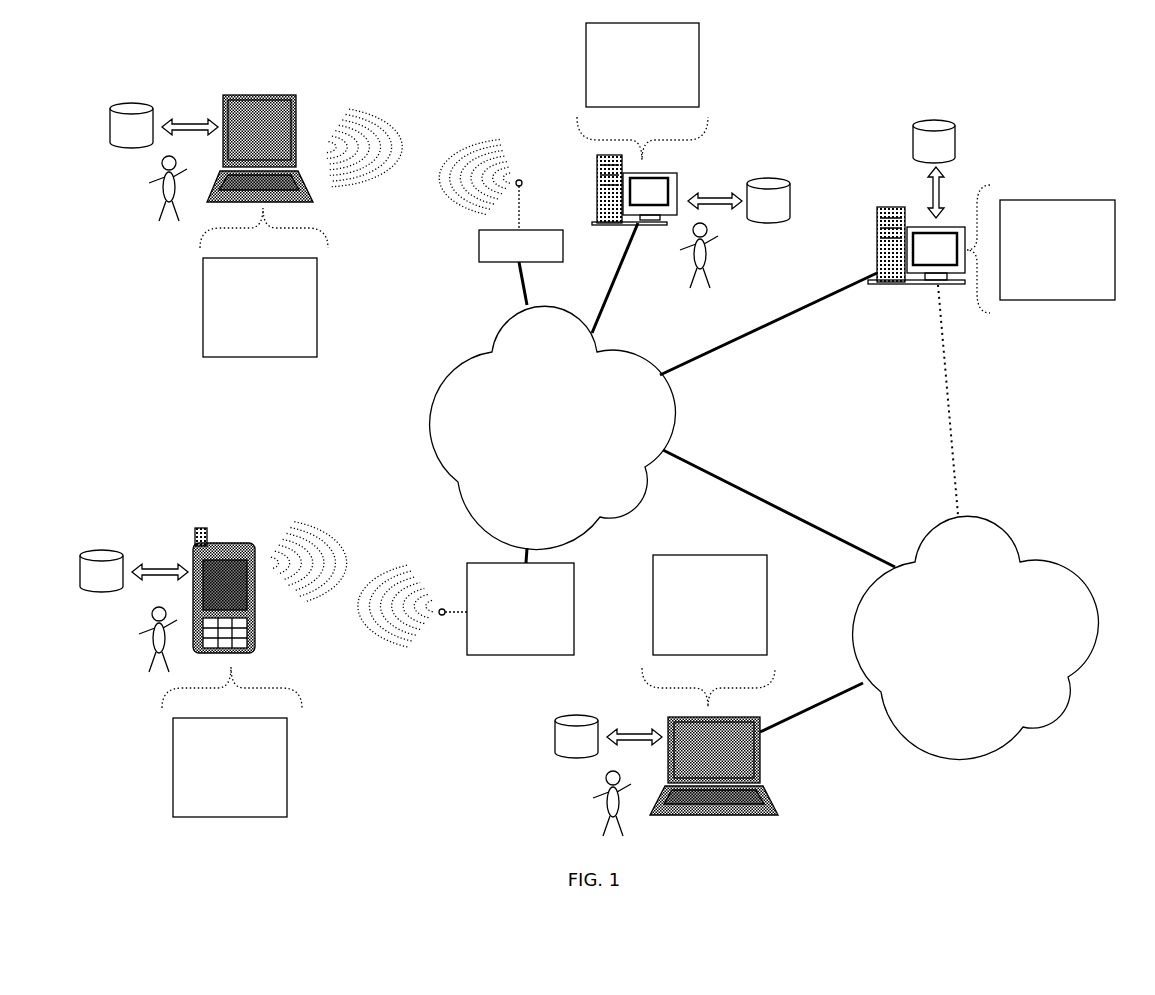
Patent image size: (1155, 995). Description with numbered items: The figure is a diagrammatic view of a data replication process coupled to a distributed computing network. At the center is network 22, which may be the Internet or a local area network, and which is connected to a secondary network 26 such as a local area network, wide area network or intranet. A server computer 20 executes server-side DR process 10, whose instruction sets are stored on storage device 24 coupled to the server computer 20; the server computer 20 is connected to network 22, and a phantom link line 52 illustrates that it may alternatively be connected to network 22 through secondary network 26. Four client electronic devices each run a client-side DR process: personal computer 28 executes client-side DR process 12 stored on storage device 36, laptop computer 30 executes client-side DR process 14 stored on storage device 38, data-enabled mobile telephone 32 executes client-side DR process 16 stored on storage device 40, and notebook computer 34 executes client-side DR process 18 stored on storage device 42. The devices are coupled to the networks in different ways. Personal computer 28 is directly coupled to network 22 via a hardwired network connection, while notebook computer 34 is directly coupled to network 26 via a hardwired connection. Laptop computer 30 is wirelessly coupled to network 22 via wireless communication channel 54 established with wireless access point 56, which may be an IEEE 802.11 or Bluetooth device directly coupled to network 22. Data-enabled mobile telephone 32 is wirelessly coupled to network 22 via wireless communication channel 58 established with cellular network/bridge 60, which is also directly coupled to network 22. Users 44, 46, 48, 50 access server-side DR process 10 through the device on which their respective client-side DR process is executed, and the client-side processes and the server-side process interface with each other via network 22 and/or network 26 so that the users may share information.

The server-side DR process 10 is at (1115, 223).
The client-side DR process 12 is at (699, 99).
The client-side DR process 14 is at (317, 280).
The client-side DR process 16 is at (287, 735).
The client-side DR process 18 is at (767, 630).
The server computer 20 is at (872, 228).
The network 22 is at (553, 427).
The storage device 24 is at (934, 169).
The network 26 is at (976, 637).
The personal computer 28 is at (677, 187).
The laptop computer 30 is at (293, 118).
The data-enabled mobile telephone 32 is at (257, 597).
The notebook computer 34 is at (760, 760).
The storage device 36 is at (739, 200).
The storage device 38 is at (164, 125).
The storage device 40 is at (134, 571).
The storage device 42 is at (608, 736).
The user 44 is at (718, 240).
The user 46 is at (137, 180).
The user 48 is at (138, 623).
The user 50 is at (582, 795).
The phantom link line 52 is at (943, 390).
The wireless communication channel 54 is at (430, 133).
The wireless access point (WAP) 56 is at (475, 247).
The wireless communication channel 58 is at (362, 565).
The cellular network/bridge 60 is at (574, 580).